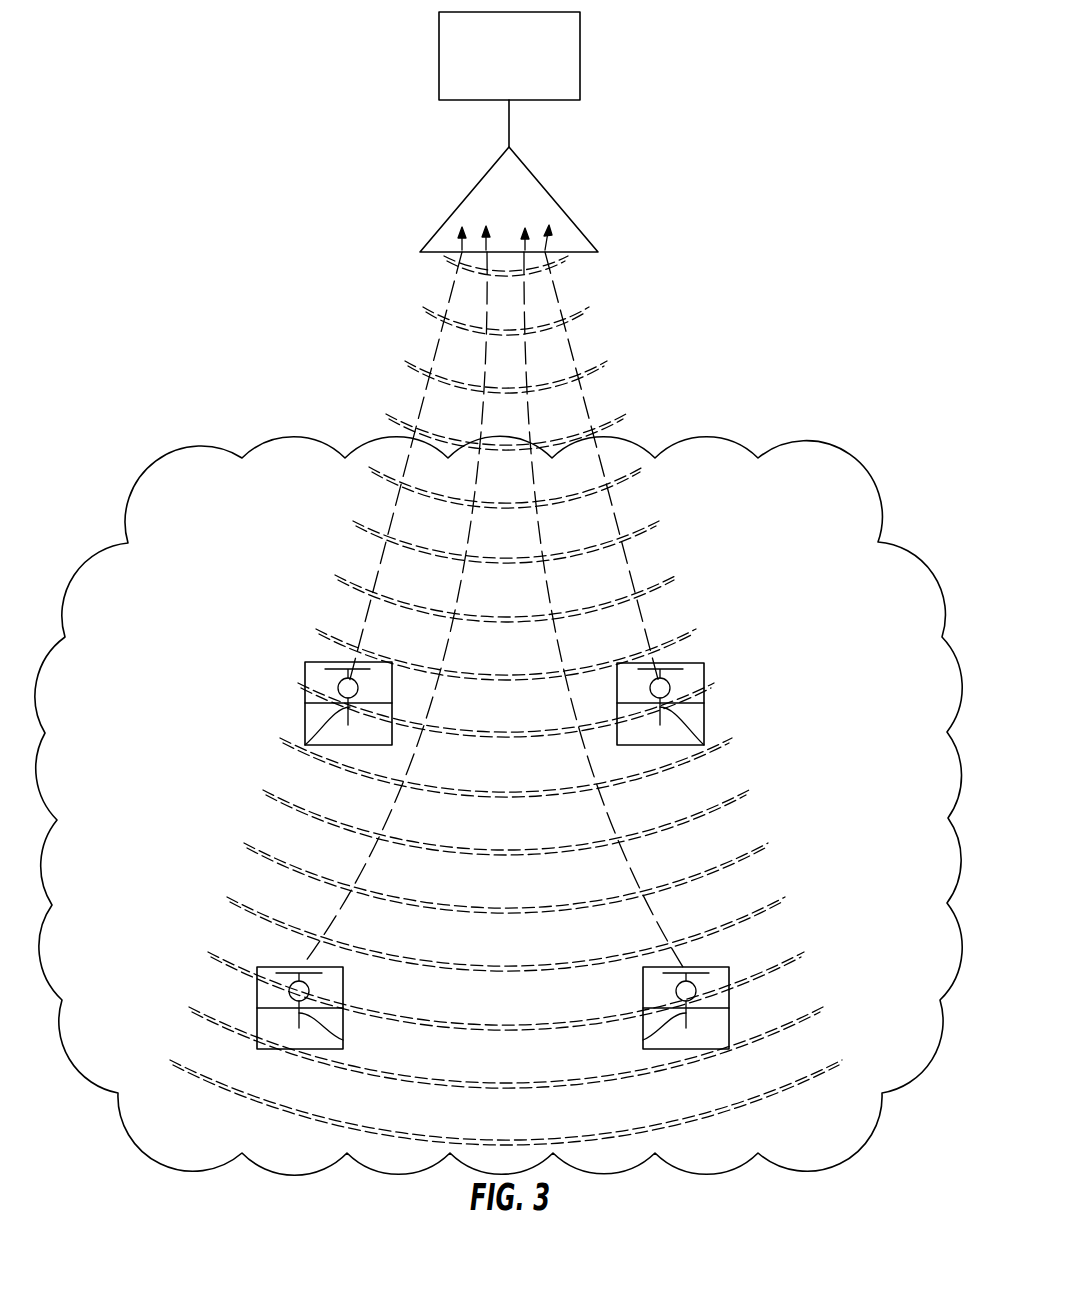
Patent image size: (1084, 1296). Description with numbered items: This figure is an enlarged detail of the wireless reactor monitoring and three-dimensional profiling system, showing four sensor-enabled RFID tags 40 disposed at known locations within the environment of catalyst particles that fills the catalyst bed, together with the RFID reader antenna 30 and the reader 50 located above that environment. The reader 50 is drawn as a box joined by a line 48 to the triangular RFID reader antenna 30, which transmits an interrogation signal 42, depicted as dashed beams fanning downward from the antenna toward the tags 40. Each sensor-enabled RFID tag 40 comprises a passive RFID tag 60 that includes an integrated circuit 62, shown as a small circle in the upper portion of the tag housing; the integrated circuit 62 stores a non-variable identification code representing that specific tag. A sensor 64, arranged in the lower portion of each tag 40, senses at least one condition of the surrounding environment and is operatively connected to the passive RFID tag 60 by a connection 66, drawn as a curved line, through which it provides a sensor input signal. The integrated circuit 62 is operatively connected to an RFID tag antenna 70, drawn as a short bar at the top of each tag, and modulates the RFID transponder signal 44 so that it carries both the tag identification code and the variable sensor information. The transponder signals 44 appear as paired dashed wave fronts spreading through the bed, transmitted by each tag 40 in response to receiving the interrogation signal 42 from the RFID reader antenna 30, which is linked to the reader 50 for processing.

The reader 50 is at (438, 55).
The connection line 48 is at (510, 125).
The RFID reader antenna 30 is at (461, 200).
The interrogation signal 42 is at (432, 312).
The RFID transponder signal 44 is at (580, 357).
The sensor-enabled RFID tag 40 is at (501, 852).
The passive RFID tag 60 is at (305, 677).
The integrated circuit 62 is at (355, 682).
The sensor 64 is at (348, 745).
The connection 66 is at (288, 697).
The RFID tag antenna 70 is at (335, 663).